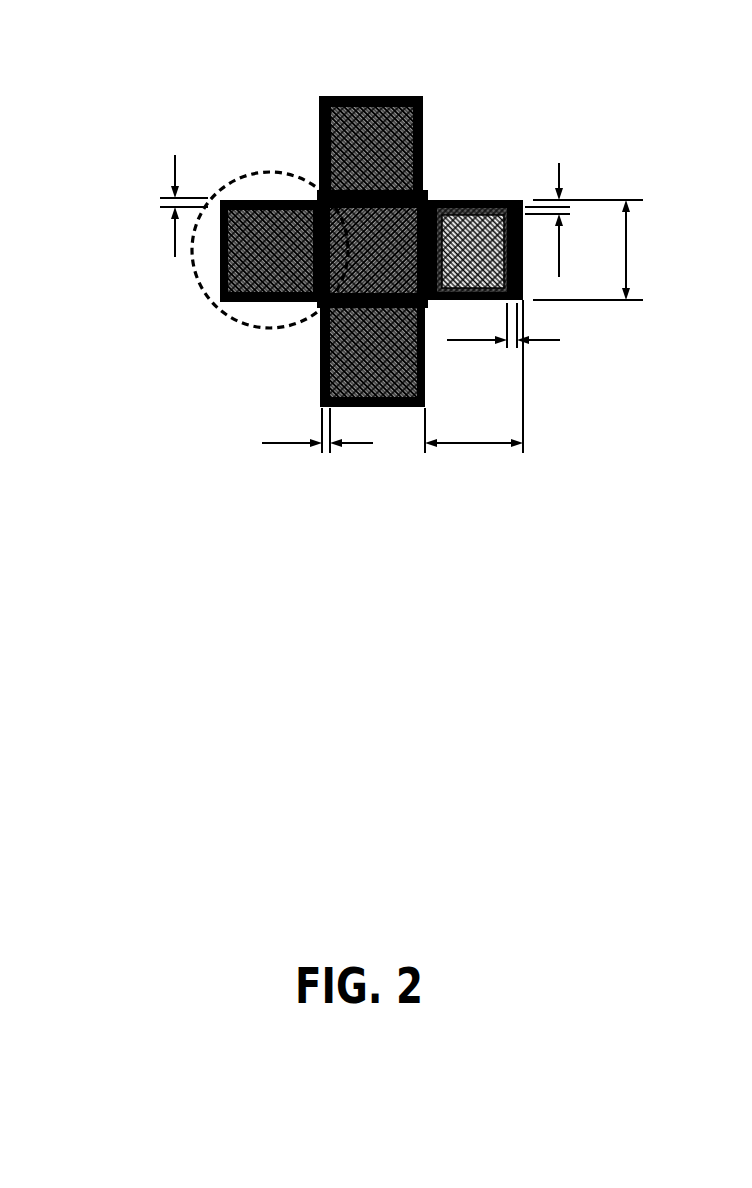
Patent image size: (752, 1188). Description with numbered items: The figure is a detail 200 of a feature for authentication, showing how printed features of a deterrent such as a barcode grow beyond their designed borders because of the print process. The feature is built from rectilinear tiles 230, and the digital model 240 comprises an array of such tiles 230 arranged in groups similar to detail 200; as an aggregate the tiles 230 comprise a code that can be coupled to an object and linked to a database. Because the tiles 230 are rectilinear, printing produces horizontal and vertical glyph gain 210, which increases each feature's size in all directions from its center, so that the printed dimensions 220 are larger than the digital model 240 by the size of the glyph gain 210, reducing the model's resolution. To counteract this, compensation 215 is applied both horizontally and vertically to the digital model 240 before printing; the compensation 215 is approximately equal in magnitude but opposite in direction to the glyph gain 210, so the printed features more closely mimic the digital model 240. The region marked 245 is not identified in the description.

The detail 200 is at (102, 64).
The glyph gain 210 is at (283, 443).
The compensation 215 is at (380, 296).
The printed dimensions 220 is at (548, 326).
The rectilinear tiles 230 is at (272, 172).
The digital model 240 is at (392, 133).
The inner feature region 245 is at (463, 237).